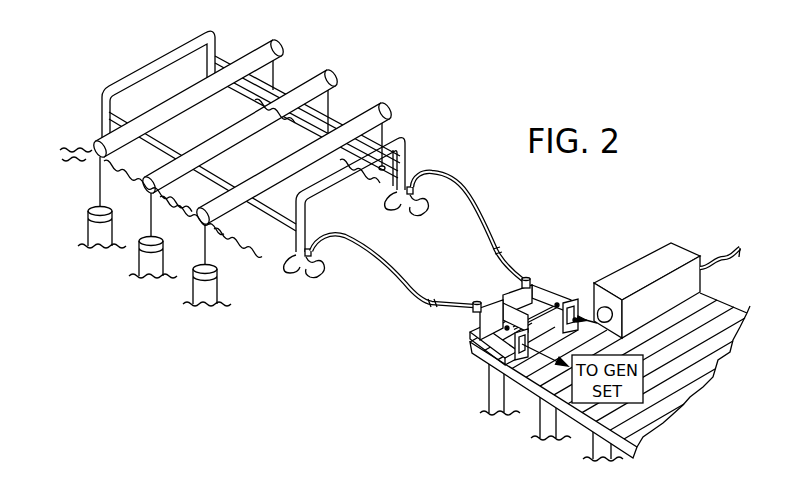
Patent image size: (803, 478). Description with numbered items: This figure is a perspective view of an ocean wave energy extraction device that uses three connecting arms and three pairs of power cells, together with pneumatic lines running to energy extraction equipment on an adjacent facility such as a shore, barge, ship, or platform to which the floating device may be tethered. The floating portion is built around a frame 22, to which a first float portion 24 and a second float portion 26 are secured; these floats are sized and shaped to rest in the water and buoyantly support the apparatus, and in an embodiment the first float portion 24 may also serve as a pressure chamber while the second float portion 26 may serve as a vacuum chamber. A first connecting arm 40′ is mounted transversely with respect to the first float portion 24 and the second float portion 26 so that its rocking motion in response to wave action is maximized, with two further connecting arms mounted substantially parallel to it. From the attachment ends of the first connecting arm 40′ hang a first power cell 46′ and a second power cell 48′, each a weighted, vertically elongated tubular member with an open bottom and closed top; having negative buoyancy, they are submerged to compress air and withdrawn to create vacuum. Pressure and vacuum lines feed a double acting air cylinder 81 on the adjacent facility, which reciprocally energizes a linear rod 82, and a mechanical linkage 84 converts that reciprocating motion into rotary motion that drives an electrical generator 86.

The frame 22 is at (162, 57).
The first float portion 24 is at (426, 216).
The second float portion 26 is at (295, 272).
The first connecting arm 40′ is at (368, 107).
The first power cell 46′ is at (218, 297).
The second power cell 48′ is at (407, 166).
The double acting air cylinder 81 is at (550, 292).
The linear rod 82 is at (490, 364).
The mechanical linkage 84 is at (607, 307).
The electrical generator 86 is at (672, 255).